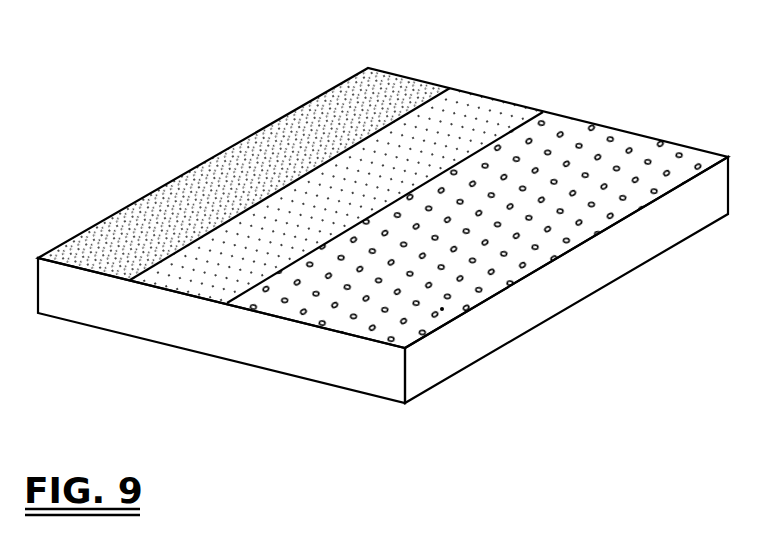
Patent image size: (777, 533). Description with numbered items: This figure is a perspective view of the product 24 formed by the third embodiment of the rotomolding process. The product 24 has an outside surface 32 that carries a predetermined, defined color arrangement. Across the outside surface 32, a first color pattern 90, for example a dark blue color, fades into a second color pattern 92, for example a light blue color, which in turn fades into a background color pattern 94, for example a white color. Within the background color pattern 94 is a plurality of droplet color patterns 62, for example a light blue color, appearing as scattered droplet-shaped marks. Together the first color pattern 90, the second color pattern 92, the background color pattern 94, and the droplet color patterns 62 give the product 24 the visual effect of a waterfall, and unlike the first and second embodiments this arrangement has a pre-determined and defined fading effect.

The product 24 is at (191, 136).
The first color pattern 90 is at (362, 80).
The second color pattern 92 is at (459, 108).
The background color pattern 94 is at (615, 138).
The outside surface 32 is at (162, 282).
The droplet color patterns 62 is at (442, 310).